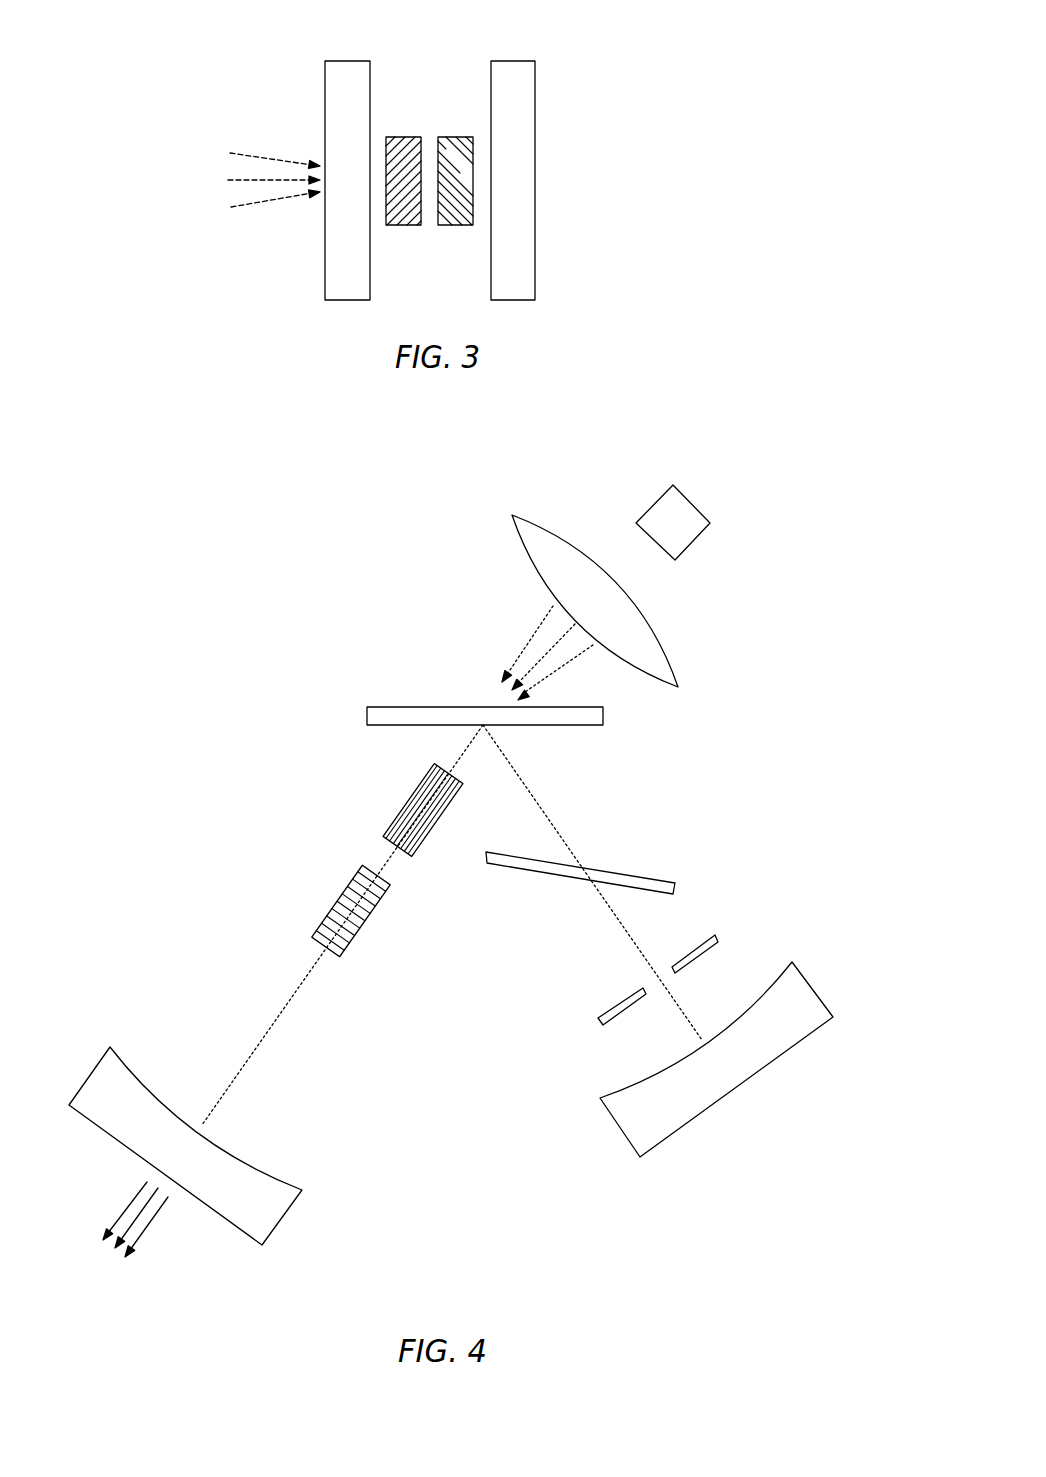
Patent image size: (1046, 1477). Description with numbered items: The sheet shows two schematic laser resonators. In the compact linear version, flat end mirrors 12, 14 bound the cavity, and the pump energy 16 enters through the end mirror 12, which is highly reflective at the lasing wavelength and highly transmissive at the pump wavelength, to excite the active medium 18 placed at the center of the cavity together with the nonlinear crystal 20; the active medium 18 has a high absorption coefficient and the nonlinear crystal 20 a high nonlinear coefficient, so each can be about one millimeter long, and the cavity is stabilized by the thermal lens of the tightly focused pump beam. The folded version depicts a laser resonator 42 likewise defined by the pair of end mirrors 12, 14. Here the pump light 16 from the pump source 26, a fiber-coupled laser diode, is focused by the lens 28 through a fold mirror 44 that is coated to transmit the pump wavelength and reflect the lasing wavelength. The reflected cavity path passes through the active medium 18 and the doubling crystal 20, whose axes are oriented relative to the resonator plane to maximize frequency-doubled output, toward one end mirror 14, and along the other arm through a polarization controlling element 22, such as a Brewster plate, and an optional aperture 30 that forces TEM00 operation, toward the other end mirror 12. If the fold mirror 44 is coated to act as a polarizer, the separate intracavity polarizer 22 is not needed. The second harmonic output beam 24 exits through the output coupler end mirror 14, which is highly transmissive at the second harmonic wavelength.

In FIG. 3, the end mirror 12 is at (343, 60).
In FIG. 4, the end mirror 12 is at (815, 988).
In FIG. 3, the end mirror 14 is at (518, 60).
In FIG. 4, the end mirror 14 is at (90, 1072).
In FIG. 3, the pump energy 16 is at (273, 153).
In FIG. 4, the pump energy 16 is at (530, 627).
In FIG. 3, the active medium 18 is at (407, 137).
In FIG. 4, the active medium 18 is at (393, 820).
In FIG. 3, the nonlinear crystal 20 is at (457, 137).
In FIG. 4, the nonlinear crystal 20 is at (328, 915).
In FIG. 4, the polarization controlling element 22 is at (612, 872).
In FIG. 4, the second harmonic output beam 24 is at (123, 1203).
In FIG. 4, the pump source 26 is at (693, 500).
In FIG. 4, the lens 28 is at (660, 647).
In FIG. 4, the aperture 30 is at (718, 935).
In FIG. 4, the laser resonator 42 is at (738, 760).
In FIG. 4, the fold mirror 44 is at (410, 706).